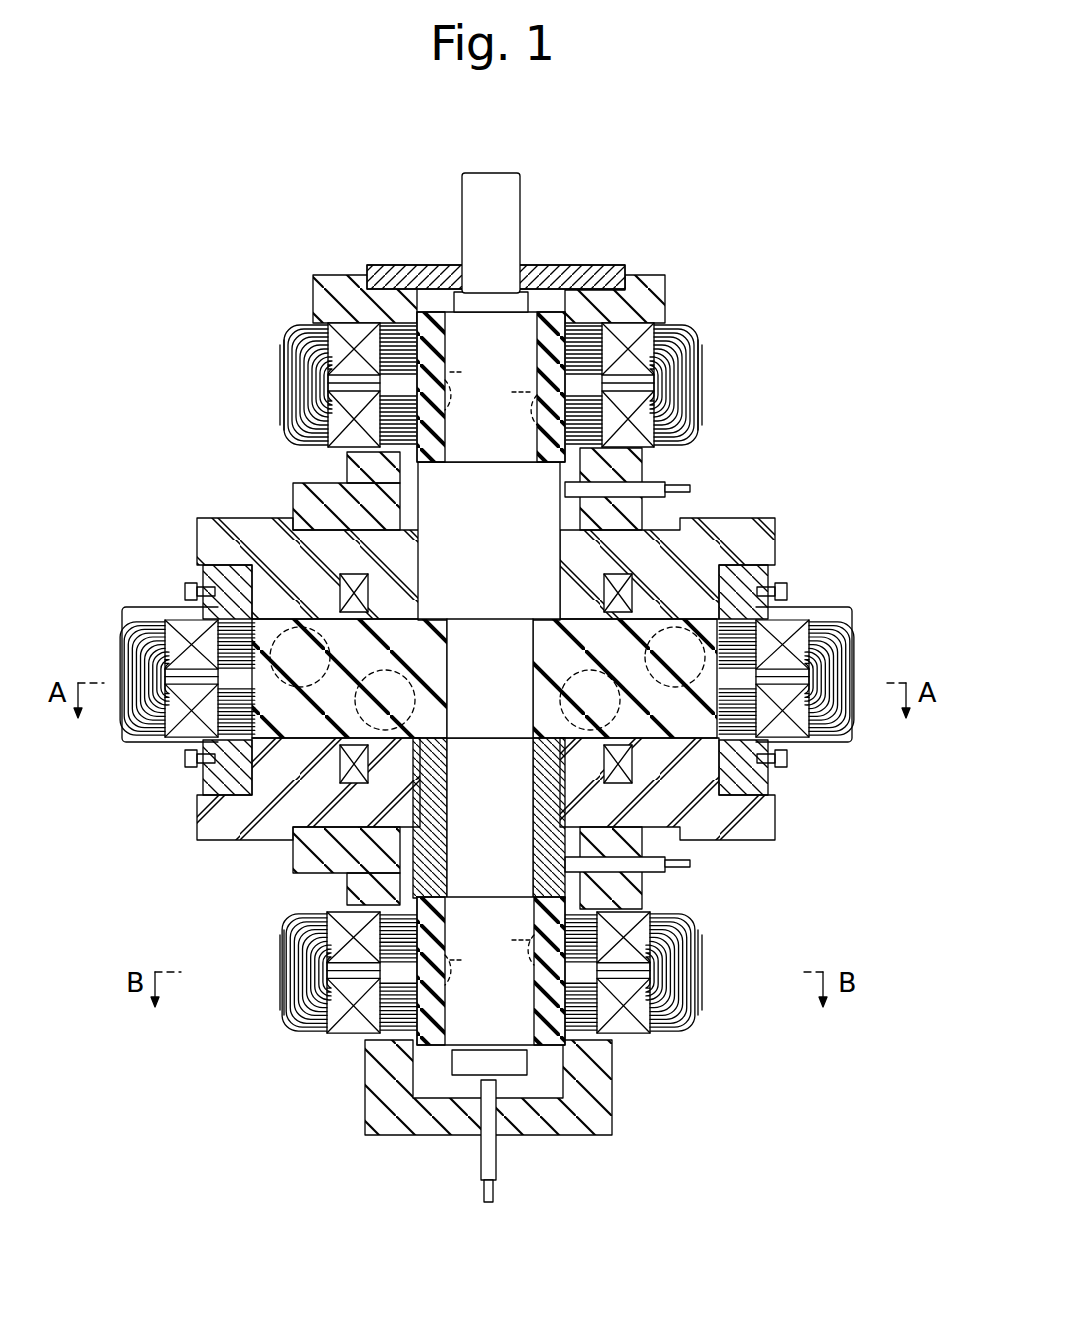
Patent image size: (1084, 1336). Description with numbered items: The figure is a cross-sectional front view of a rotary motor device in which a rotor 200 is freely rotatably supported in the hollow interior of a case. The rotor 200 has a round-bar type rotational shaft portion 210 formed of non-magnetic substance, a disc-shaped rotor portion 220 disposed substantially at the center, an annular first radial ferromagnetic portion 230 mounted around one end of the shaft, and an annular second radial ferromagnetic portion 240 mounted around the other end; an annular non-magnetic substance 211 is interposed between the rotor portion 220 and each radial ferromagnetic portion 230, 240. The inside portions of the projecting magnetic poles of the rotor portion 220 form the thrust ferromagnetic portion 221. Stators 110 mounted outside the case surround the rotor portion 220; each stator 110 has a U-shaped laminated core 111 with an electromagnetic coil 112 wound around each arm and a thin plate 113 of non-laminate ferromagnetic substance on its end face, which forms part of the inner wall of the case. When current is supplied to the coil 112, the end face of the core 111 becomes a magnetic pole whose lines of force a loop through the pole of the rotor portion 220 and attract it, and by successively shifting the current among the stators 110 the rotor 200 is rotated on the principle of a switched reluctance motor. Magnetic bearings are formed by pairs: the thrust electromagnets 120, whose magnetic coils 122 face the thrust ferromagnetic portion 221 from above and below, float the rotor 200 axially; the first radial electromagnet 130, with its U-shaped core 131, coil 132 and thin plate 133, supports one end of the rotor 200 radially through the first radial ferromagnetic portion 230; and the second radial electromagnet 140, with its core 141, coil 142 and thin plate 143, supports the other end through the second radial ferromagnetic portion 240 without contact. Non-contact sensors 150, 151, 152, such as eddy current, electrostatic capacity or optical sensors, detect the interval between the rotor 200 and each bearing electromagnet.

The stator 110 is at (499, 667).
The core 111 is at (134, 742).
The electromagnetic coil 112 is at (183, 736).
The thin plate 113 is at (275, 640).
The thrust electromagnet 120 is at (191, 815).
The magnetic coil 122 is at (628, 574).
The first radial electromagnet 130 is at (506, 1064).
The core 131 is at (305, 1032).
The electromagnetic coil 132 is at (347, 1042).
The thin plate 133 is at (537, 903).
The second radial electromagnet 140 is at (532, 324).
The core 141 is at (679, 335).
The electromagnetic coil 142 is at (633, 330).
The thin plate 143 is at (537, 340).
The non-contact sensor 150 is at (497, 1165).
The non-contact sensor 151 is at (688, 873).
The non-contact sensor 152 is at (652, 480).
The rotor 200 is at (481, 195).
The rotational shaft portion 210 is at (462, 232).
The non-magnetic substance 211 is at (425, 782).
The rotor portion 220 is at (300, 742).
The thrust ferromagnetic portion 221 is at (402, 558).
The first radial ferromagnetic portion 230 is at (556, 1045).
The second radial ferromagnetic portion 240 is at (507, 322).